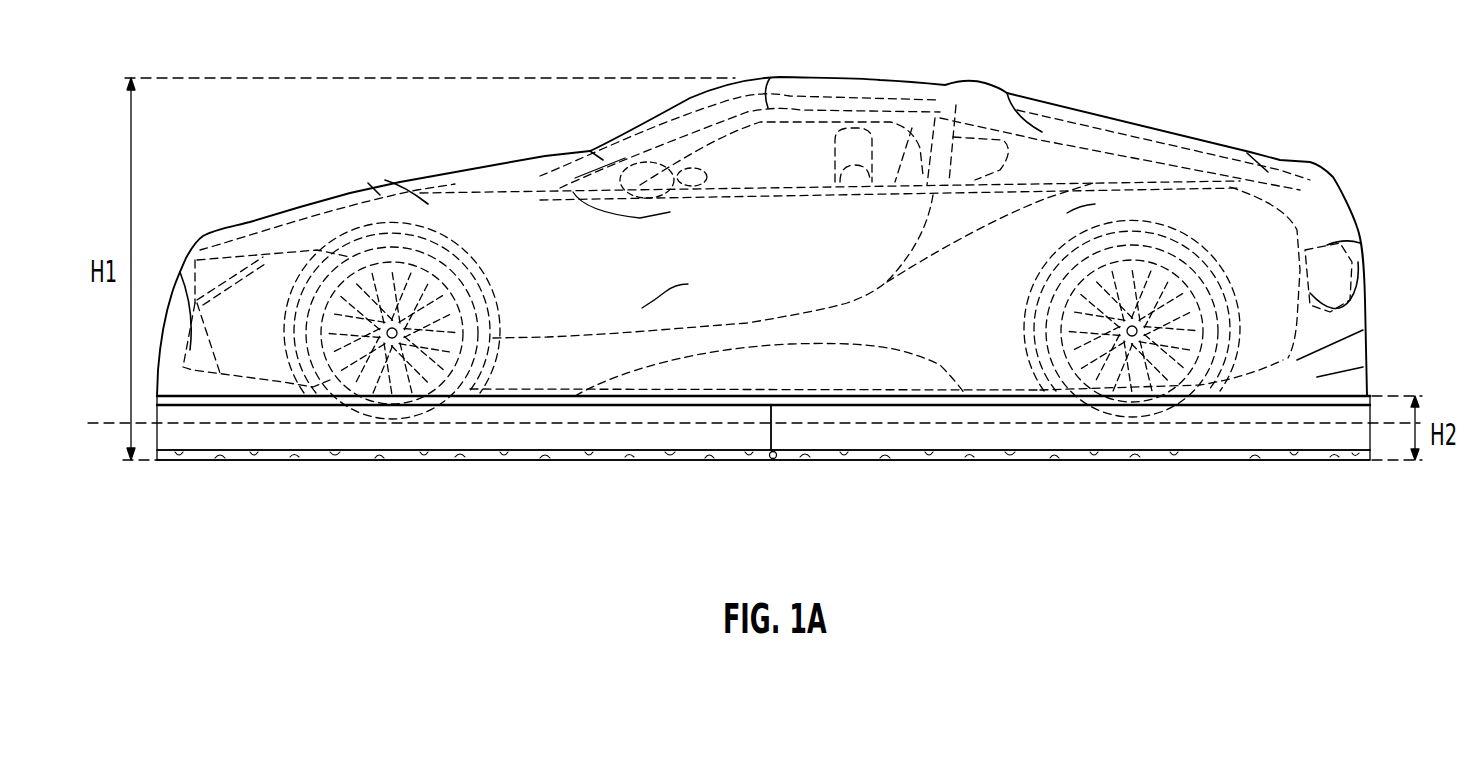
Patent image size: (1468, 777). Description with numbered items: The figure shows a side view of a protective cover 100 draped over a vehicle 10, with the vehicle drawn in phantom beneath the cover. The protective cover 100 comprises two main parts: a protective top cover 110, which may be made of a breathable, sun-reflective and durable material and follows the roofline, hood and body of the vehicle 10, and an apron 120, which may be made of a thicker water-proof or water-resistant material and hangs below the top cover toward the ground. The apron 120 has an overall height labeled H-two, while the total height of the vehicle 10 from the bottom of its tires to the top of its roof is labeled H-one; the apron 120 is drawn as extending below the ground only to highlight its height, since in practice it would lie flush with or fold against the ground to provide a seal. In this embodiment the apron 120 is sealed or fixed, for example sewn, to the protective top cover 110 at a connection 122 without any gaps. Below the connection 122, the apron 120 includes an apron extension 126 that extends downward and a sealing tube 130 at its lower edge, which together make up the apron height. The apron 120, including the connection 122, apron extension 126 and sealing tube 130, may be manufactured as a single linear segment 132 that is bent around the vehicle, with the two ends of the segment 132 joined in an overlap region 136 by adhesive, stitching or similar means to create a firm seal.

The protective cover 100 is at (1256, 75).
The vehicle 10 is at (513, 178).
The protective top cover 110 is at (858, 78).
The apron 120 is at (224, 442).
The connection 122 is at (968, 392).
The apron extension 126 is at (955, 436).
The sealing tube 130 is at (1217, 462).
The segment 132 is at (777, 468).
The overlap region 136 is at (764, 447).